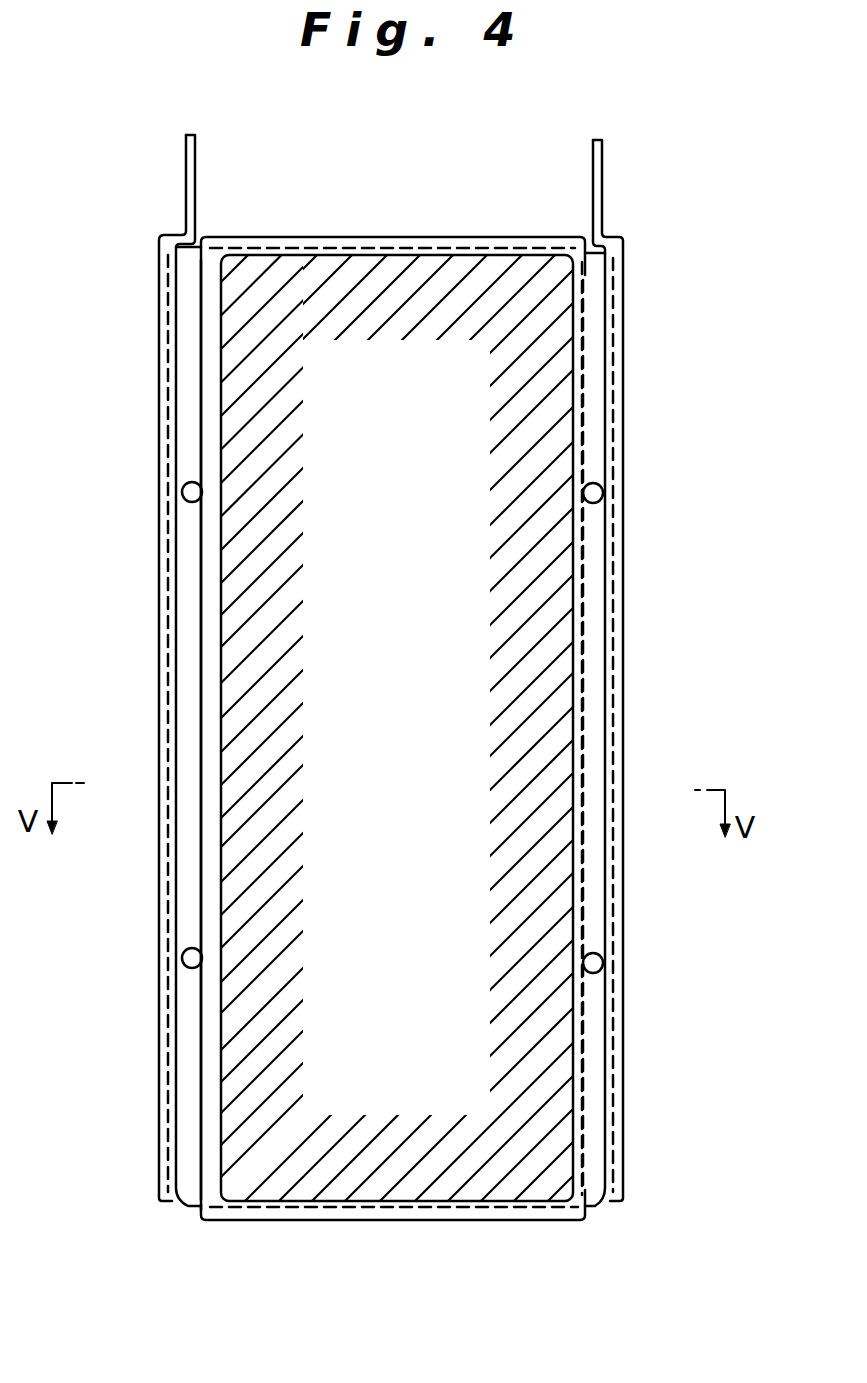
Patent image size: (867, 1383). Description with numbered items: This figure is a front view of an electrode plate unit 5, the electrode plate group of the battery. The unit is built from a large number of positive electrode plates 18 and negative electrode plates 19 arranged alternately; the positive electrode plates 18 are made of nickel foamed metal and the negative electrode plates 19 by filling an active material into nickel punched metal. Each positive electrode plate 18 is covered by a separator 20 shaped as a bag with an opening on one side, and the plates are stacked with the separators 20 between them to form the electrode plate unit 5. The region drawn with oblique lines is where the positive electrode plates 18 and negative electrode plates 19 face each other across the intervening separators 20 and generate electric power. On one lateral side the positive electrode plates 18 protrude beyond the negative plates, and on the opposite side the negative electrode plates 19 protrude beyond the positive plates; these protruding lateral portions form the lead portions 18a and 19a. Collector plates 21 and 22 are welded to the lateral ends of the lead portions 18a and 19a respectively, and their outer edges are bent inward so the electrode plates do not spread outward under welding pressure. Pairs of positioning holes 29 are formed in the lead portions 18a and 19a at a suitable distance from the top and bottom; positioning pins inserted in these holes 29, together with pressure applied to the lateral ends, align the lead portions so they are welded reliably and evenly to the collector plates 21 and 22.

The electrode plate unit 5 is at (640, 254).
The positive electrode plate 18 is at (340, 250).
The lead portion 18a is at (188, 717).
The negative electrode plate 19 is at (470, 250).
The lead portion 19a is at (595, 720).
The separator 20 is at (213, 627).
The collector plate 21 is at (165, 878).
The collector plate 22 is at (617, 865).
The positioning holes 29 is at (183, 490).